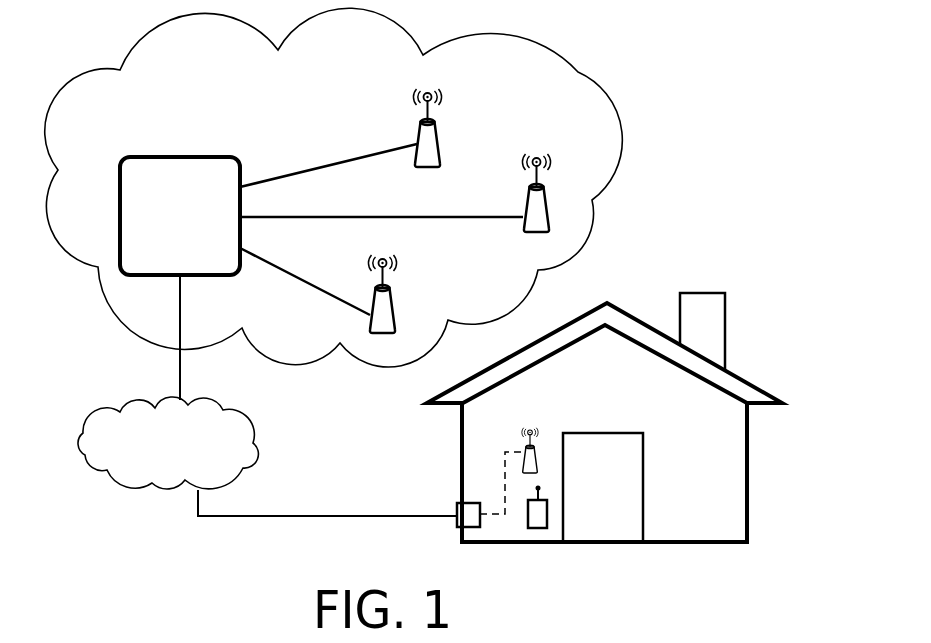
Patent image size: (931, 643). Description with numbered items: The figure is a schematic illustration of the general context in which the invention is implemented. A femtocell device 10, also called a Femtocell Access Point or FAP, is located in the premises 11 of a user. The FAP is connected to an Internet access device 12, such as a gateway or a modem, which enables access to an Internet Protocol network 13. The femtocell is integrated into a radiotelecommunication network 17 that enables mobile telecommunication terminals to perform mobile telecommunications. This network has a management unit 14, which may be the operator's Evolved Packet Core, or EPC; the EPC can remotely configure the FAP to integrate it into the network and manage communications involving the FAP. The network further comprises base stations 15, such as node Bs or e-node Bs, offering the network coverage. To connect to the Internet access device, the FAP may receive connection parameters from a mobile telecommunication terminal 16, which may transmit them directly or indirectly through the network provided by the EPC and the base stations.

The femtocell device 10 is at (522, 462).
The premises 11 is at (700, 520).
The Internet access device 12 is at (462, 510).
The Internet Protocol network 13 is at (135, 480).
The management unit 14 is at (192, 163).
The base stations 15 is at (440, 142).
The mobile telecommunication terminal 16 is at (537, 520).
The radiotelecommunication network 17 is at (577, 72).